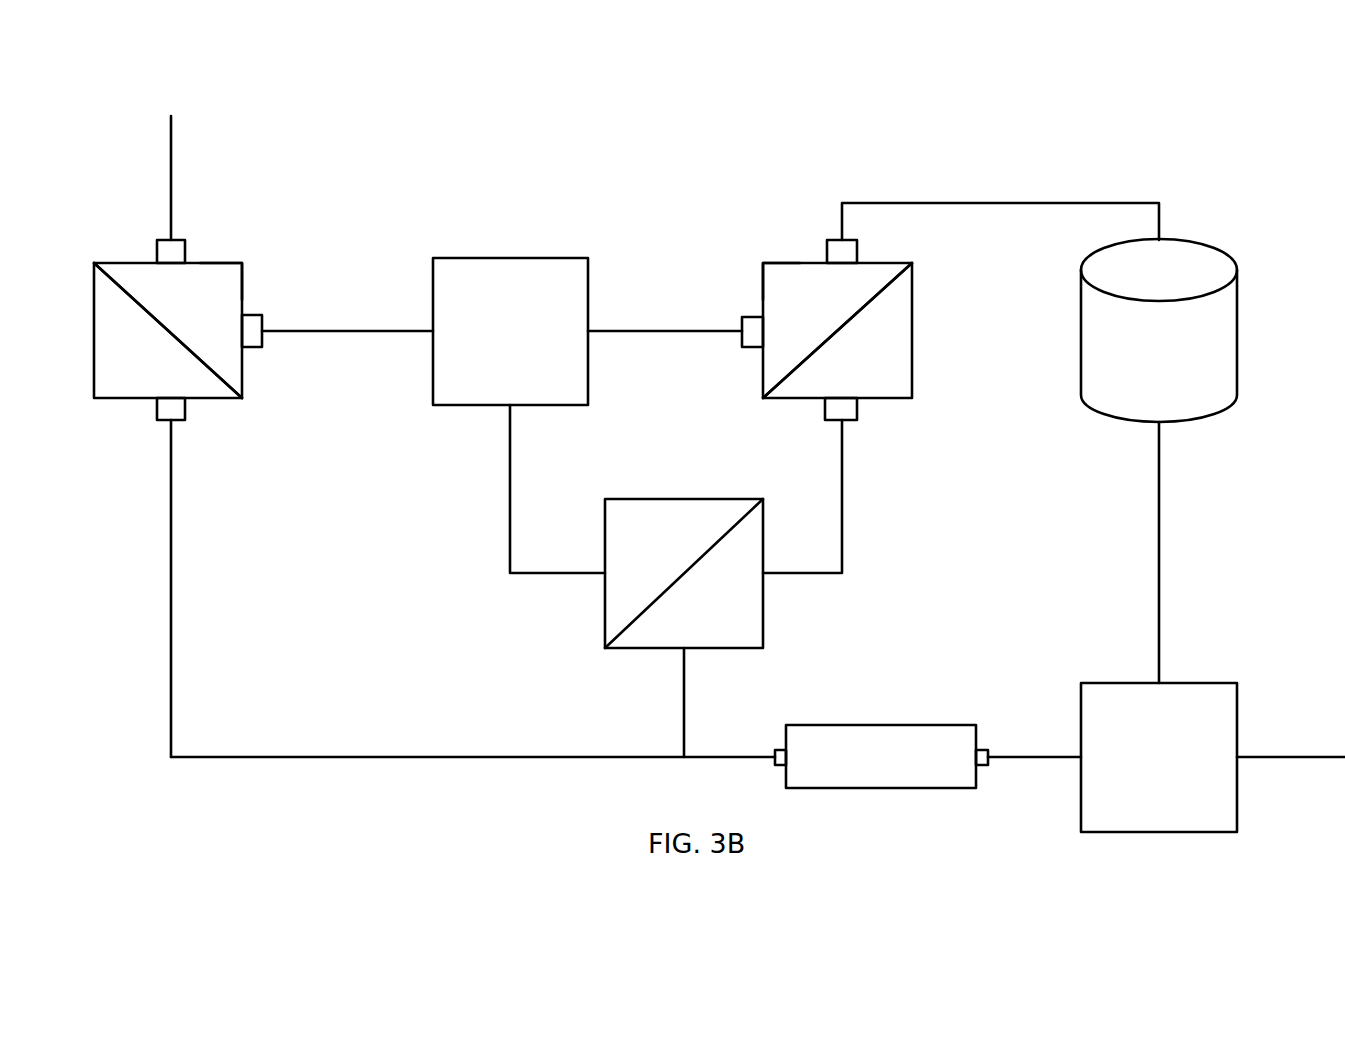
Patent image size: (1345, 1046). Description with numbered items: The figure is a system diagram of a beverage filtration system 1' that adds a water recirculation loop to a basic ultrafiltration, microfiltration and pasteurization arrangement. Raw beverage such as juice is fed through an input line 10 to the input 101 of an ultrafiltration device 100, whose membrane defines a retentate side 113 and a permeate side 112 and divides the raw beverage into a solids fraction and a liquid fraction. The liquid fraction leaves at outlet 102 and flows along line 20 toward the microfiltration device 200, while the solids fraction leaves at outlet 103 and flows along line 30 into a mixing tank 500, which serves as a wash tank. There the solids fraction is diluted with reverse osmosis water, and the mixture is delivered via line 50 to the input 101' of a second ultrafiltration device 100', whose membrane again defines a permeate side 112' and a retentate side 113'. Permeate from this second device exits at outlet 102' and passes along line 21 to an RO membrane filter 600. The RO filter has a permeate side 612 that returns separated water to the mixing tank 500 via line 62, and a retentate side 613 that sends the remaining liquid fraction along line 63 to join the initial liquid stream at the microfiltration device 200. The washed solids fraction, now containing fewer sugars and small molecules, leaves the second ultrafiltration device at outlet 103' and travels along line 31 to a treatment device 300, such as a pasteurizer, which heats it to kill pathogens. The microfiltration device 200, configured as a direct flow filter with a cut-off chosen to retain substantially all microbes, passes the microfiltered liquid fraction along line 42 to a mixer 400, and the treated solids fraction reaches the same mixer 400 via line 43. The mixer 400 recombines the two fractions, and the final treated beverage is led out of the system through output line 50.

The system 1' is at (50, 74).
The input line 10 is at (171, 181).
The ultrafiltration device 100 is at (163, 295).
The input 101 is at (207, 211).
The outlet 102 is at (218, 433).
The outlet 103 is at (280, 301).
The permeate side 112 is at (131, 330).
The retentate side 113 is at (250, 256).
The line 20 is at (171, 462).
The line 30 is at (361, 331).
The mixing tank 500 is at (491, 258).
The line 50 is at (669, 331).
The line 62 is at (510, 490).
The RO membrane filter 600 is at (698, 508).
The permeate side 612 is at (643, 528).
The retentate side 613 is at (722, 627).
The line 21 is at (845, 517).
The line 63 is at (683, 700).
The line 42 is at (354, 757).
The microfiltration device 200 is at (888, 775).
The mixer 400 is at (1117, 697).
The line 43 is at (1158, 505).
The treatment device 300 is at (1188, 252).
The line 31 is at (1002, 203).
The ultrafiltration device 100' is at (837, 276).
The input 101' is at (711, 284).
The outlet 102' is at (890, 431).
The outlet 103' is at (899, 244).
The permeate side 112' is at (881, 330).
The retentate side 113' is at (763, 251).